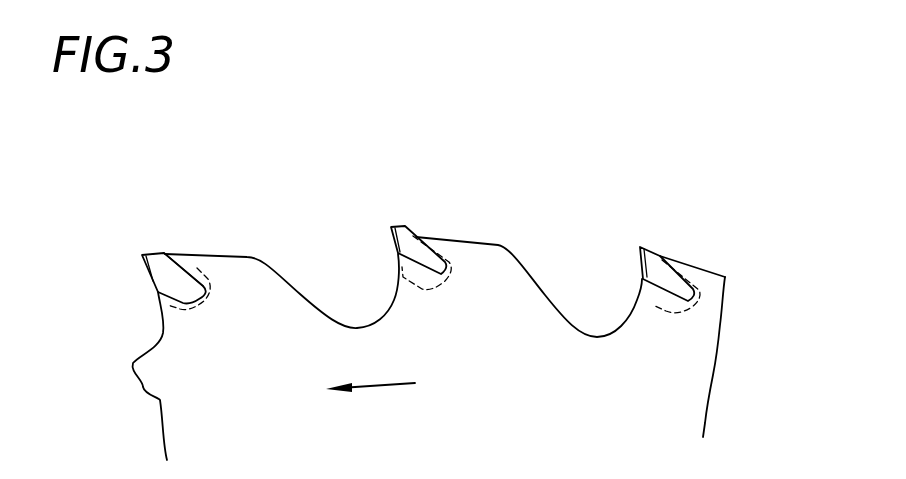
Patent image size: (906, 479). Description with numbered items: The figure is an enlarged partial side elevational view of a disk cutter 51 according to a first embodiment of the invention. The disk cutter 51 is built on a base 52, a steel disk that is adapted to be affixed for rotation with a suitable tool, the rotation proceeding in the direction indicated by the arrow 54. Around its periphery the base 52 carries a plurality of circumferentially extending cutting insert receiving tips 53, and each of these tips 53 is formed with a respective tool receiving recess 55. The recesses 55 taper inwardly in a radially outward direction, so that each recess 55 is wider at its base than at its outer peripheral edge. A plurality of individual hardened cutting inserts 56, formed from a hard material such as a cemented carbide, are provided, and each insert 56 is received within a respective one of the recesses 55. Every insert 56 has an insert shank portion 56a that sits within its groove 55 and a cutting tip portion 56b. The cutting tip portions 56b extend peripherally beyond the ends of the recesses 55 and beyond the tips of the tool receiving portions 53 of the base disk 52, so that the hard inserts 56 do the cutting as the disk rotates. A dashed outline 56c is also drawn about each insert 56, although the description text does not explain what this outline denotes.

The disk cutter 51 is at (330, 244).
The base 52 is at (167, 403).
The cutting insert receiving tips 53 is at (248, 271).
The arrow 54 is at (380, 387).
The tool receiving recess 55 is at (162, 288).
The cutting inserts 56 is at (143, 272).
The insert shank portion 56a is at (177, 273).
The cutting tip portion 56b is at (145, 255).
The set outline of cutting tip 56c is at (216, 271).